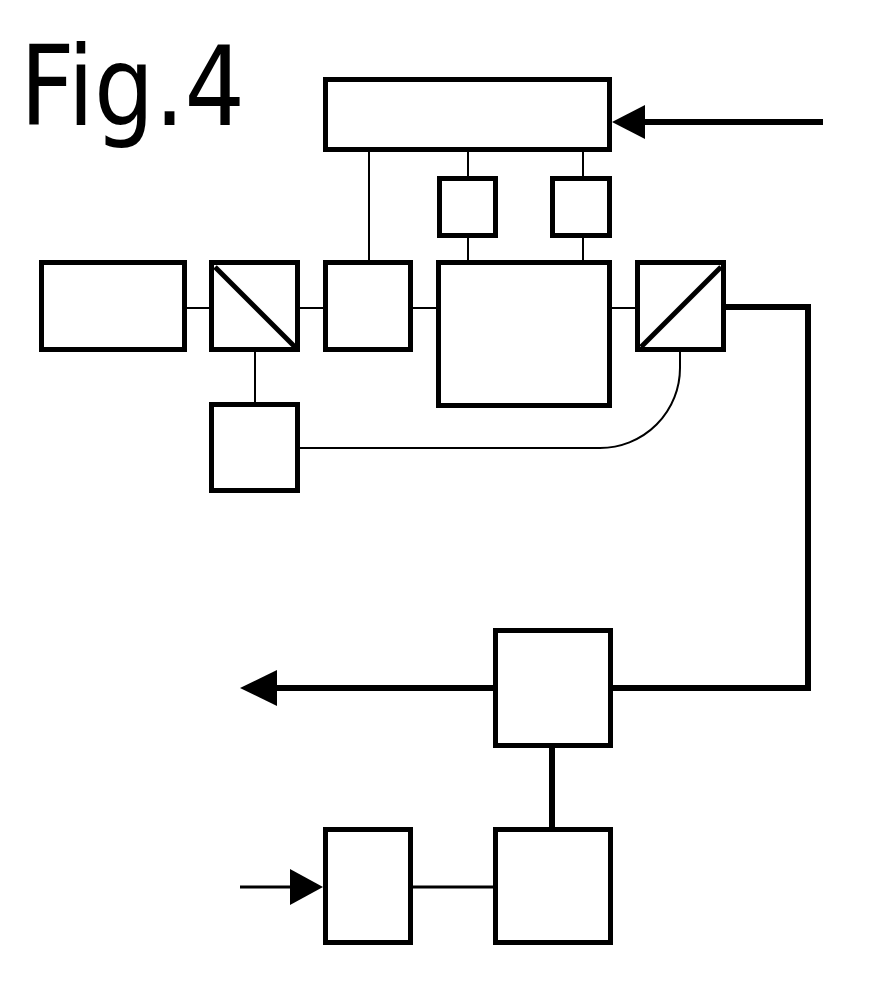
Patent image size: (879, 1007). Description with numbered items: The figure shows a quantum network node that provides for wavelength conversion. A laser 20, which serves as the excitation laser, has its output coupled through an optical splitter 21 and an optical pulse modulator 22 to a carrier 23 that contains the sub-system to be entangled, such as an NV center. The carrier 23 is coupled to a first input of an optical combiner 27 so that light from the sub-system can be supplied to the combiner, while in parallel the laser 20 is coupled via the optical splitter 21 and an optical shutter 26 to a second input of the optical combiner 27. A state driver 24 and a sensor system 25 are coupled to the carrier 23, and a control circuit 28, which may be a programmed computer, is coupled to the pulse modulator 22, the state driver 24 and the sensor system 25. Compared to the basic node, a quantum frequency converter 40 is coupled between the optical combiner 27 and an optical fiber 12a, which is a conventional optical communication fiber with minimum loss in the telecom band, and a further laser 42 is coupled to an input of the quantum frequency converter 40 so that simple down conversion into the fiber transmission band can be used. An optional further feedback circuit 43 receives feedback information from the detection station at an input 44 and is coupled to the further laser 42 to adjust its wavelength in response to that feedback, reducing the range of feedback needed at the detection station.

The optical fiber 12a is at (380, 688).
The laser 20 is at (100, 352).
The optical splitter 21 is at (237, 260).
The optical pulse modulator 22 is at (355, 352).
The carrier 23 is at (520, 260).
The state driver 24 is at (437, 210).
The sensor system 25 is at (612, 203).
The optical shutter 26 is at (209, 463).
The optical combiner 27 is at (707, 352).
The control circuit 28 is at (408, 77).
The quantum frequency converter 40 is at (550, 628).
The further laser 42 is at (613, 885).
The further feedback circuit 43 is at (352, 827).
The input signal 44 is at (270, 885).